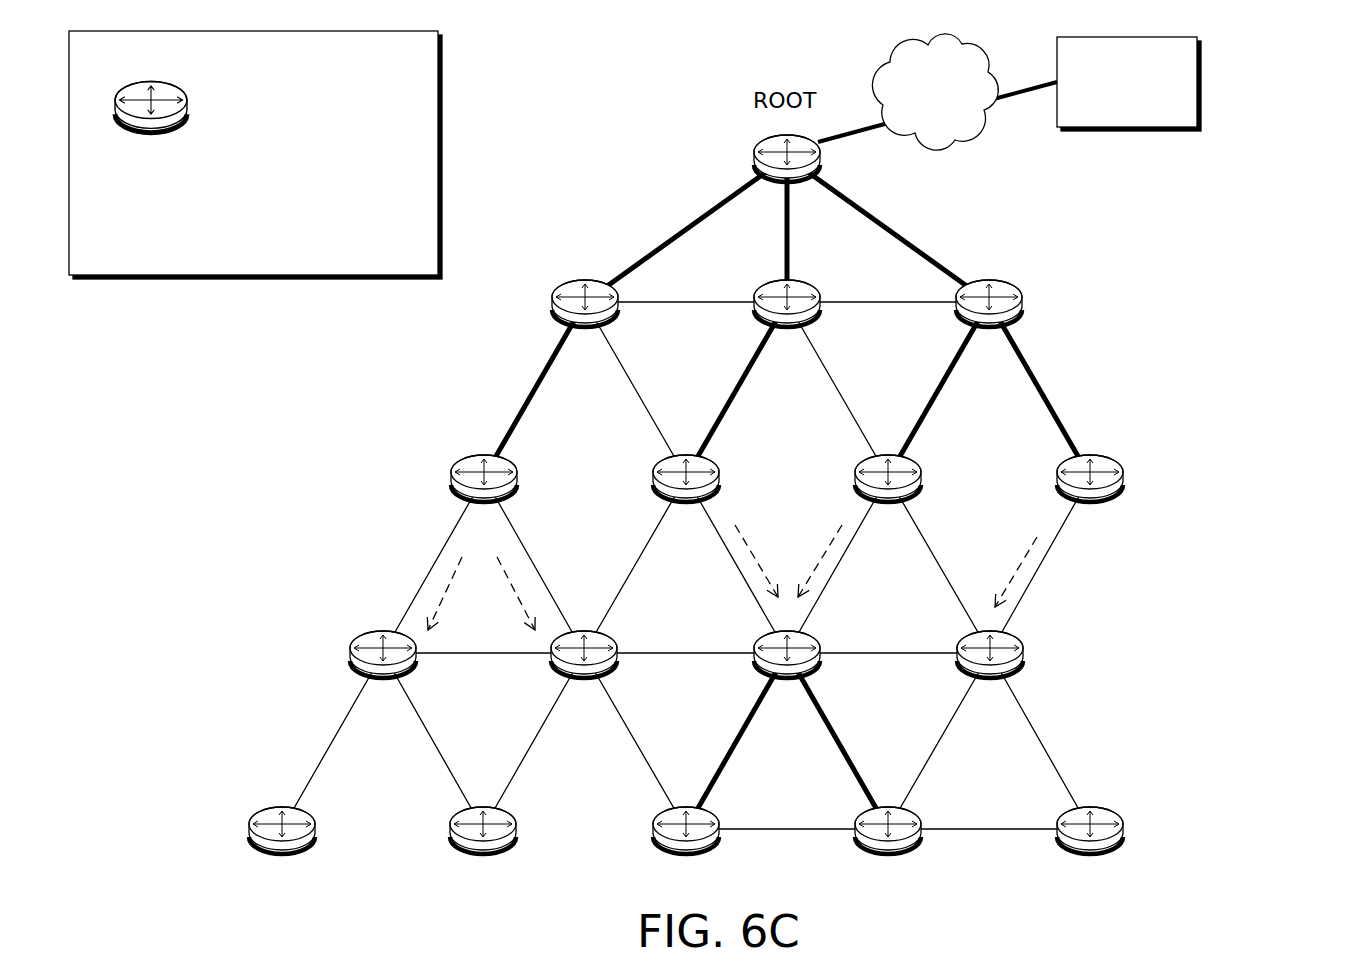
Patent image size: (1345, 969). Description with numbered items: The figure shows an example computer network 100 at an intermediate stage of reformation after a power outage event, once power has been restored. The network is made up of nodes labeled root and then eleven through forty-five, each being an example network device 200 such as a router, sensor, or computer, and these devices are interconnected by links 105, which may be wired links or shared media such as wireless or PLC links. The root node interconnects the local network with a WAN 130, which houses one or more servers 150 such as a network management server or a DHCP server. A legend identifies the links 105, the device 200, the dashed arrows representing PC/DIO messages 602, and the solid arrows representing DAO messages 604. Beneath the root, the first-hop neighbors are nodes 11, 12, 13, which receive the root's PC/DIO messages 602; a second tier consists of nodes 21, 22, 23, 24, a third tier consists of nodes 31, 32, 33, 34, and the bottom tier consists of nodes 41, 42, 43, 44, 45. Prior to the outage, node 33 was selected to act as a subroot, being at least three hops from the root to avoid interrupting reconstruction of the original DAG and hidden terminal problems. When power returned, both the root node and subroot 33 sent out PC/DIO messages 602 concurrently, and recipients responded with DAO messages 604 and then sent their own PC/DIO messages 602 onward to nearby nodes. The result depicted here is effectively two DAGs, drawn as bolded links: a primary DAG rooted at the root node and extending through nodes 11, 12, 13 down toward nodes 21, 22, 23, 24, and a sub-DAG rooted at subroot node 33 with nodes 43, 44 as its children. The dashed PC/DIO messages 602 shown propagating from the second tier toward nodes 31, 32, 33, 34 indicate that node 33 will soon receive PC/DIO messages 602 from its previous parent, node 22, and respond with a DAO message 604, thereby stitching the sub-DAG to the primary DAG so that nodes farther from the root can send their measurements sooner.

The computer network 100 is at (1255, 97).
The links 105 is at (105, 54).
The WAN 130 is at (913, 115).
The servers 150 is at (1106, 107).
The network device/node 200 is at (238, 106).
The PC/DIO messages 602 is at (123, 179).
The DAO messages 604 is at (113, 243).
The node 11 is at (585, 323).
The node 12 is at (787, 323).
The node 13 is at (989, 323).
The node 21 is at (484, 498).
The node 22 is at (686, 498).
The node 23 is at (888, 498).
The node 24 is at (1090, 498).
The node 31 is at (383, 674).
The node 32 is at (584, 674).
The subroot node 33 is at (787, 700).
The node 34 is at (990, 674).
The node 41 is at (282, 850).
The node 42 is at (483, 850).
The node 43 is at (686, 850).
The node 44 is at (888, 850).
The node 45 is at (1090, 850).